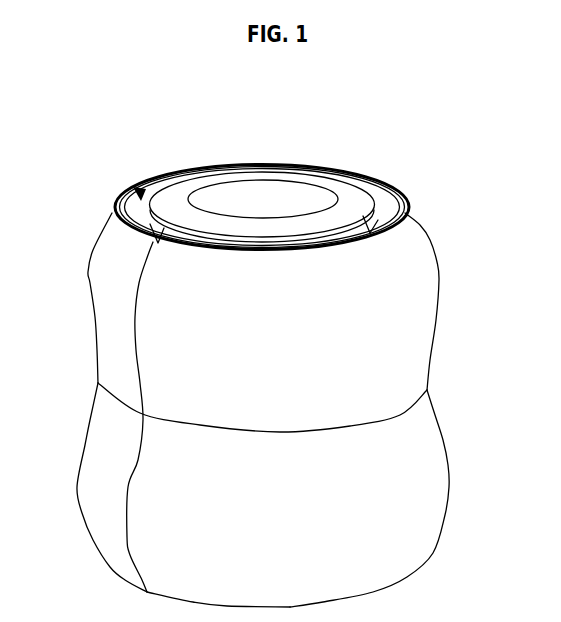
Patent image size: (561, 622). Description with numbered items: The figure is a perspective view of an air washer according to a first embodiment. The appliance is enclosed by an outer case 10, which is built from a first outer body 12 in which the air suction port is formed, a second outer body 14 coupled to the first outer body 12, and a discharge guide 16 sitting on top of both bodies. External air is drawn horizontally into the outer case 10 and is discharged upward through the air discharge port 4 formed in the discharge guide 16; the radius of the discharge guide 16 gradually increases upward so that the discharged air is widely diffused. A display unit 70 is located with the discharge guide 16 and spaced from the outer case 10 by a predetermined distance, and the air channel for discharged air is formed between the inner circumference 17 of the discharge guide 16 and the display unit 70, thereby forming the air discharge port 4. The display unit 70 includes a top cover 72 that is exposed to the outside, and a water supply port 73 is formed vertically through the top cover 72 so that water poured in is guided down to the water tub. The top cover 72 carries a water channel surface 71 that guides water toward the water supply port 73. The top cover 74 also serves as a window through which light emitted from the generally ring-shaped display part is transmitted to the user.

The outer case 10 is at (276, 347).
The first outer body 12 is at (92, 455).
The second outer body 14 is at (375, 518).
The discharge guide 16 is at (404, 196).
The inner circumference 17 is at (135, 205).
The air discharge port 4 is at (237, 169).
The display unit 70 is at (140, 194).
The water channel surface 71 is at (303, 193).
The top cover 72 is at (150, 240).
The water supply port 73 is at (265, 207).
The top cover window 74 is at (348, 197).